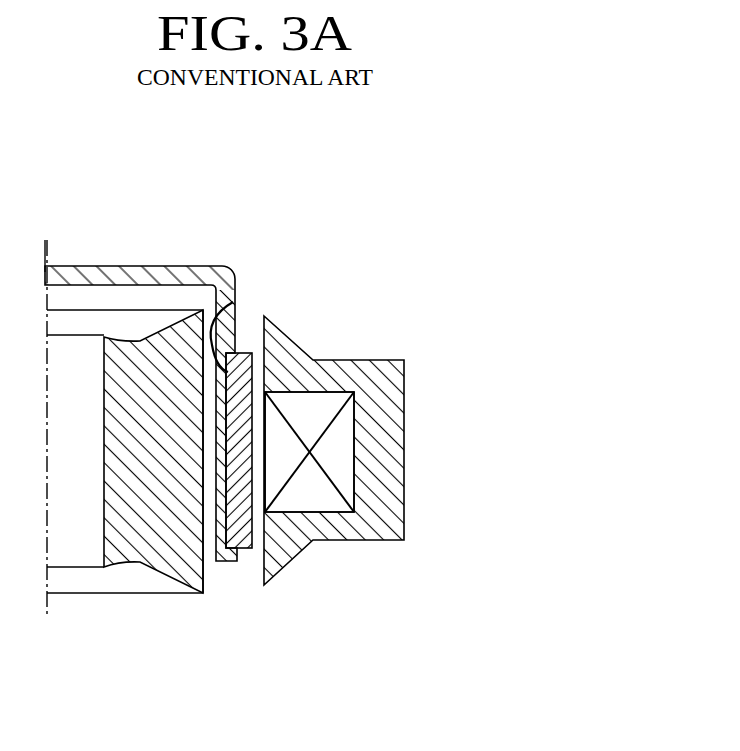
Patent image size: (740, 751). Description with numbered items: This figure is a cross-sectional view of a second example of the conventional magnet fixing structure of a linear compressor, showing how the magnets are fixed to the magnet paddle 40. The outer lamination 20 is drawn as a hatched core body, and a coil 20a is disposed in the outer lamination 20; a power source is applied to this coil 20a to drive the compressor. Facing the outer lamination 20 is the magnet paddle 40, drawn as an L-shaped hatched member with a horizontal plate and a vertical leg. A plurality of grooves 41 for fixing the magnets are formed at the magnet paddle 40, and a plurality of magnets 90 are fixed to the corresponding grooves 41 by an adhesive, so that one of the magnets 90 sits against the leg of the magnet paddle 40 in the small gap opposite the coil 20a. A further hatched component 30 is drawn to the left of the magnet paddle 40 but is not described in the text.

The outer lamination 20 is at (400, 487).
The coil 20a is at (348, 419).
The rotor 30 is at (127, 560).
The magnet paddle 40 is at (202, 266).
The grooves 41 is at (233, 303).
The magnets 90 is at (245, 548).